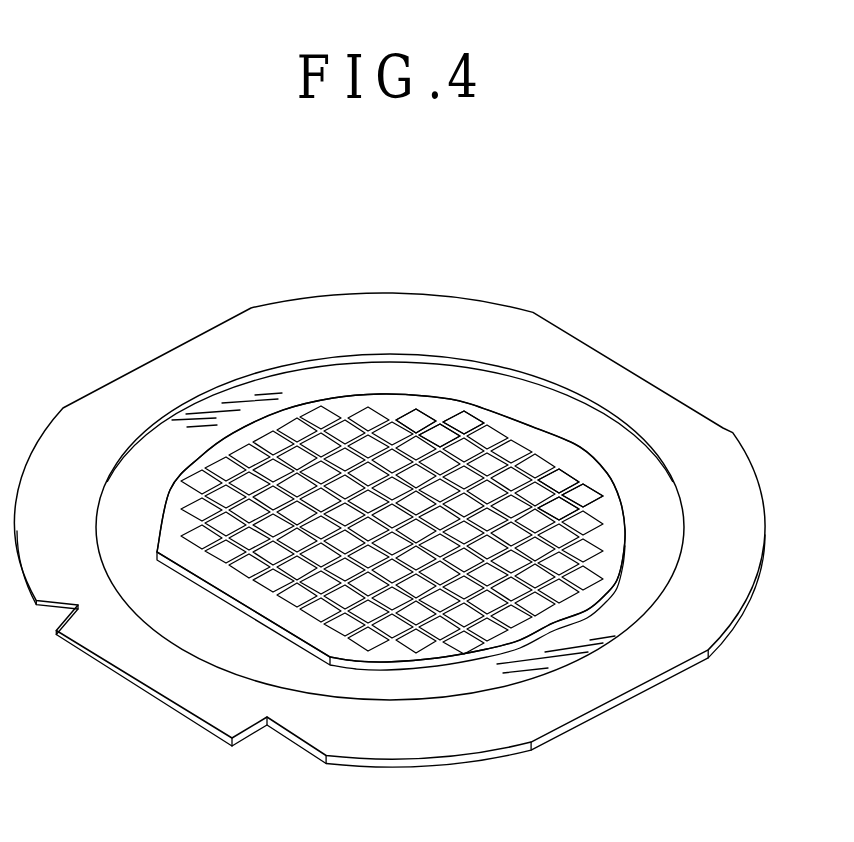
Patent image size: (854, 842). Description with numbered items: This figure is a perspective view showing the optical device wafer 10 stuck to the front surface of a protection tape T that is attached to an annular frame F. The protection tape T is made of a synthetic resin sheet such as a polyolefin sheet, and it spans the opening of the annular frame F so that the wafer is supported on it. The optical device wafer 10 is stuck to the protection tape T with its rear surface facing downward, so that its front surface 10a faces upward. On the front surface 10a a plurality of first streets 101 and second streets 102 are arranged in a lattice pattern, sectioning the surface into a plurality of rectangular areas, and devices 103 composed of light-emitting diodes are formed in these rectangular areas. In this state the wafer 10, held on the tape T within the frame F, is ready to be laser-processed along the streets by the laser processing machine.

The optical device wafer 10 is at (335, 391).
The front surface 10a is at (537, 442).
The first streets 101 is at (587, 600).
The second streets 102 is at (438, 429).
The devices 103 is at (583, 493).
The protection tape T is at (155, 454).
The annular frame F is at (723, 475).